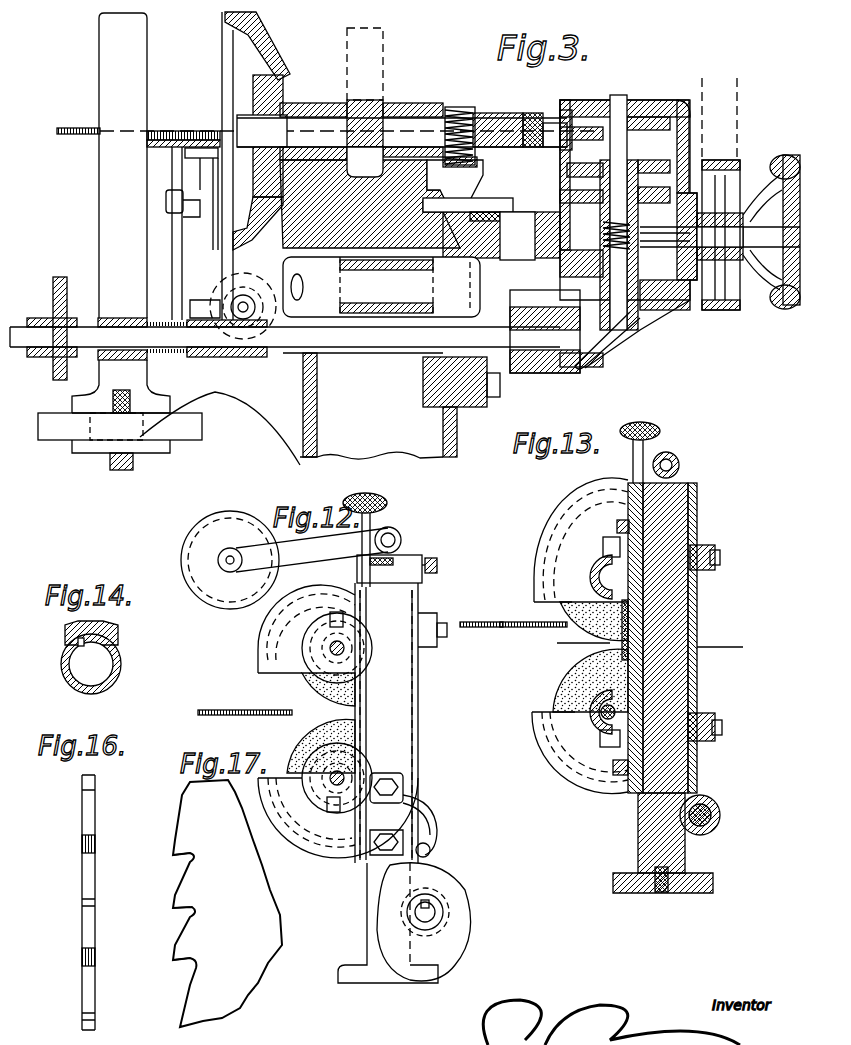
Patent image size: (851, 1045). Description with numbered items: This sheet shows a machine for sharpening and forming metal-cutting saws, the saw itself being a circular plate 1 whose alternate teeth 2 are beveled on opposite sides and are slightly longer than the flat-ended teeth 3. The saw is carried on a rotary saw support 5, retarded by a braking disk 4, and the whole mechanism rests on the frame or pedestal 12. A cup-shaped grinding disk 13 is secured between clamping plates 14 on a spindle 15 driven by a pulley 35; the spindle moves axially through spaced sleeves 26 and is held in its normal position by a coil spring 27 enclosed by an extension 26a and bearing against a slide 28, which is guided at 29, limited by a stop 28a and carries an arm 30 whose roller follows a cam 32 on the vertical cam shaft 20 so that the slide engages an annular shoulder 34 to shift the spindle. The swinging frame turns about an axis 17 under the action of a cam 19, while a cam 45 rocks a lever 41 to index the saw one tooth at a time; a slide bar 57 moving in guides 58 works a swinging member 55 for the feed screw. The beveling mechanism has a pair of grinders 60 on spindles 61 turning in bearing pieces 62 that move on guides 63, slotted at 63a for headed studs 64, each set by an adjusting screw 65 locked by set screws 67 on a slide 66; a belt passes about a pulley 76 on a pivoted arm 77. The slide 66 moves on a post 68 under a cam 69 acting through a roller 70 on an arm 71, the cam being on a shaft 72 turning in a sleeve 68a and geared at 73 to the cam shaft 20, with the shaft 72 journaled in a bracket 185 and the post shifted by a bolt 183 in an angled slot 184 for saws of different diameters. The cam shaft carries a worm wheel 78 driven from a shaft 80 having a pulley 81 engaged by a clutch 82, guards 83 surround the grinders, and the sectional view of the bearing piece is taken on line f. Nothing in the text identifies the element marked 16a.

In FIG. 3, the circular plate 1 is at (78, 128).
In FIG. 12, the circular plate 1 is at (250, 717).
In FIG. 13, the circular plate 1 is at (503, 630).
In FIG. 16, the circular plate 1 is at (97, 928).
In FIG. 17, the circular plate 1 is at (227, 903).
In FIG. 16, the teeth 2 is at (84, 848).
In FIG. 17, the teeth 2 is at (190, 853).
In FIG. 16, the teeth 3 is at (86, 903).
In FIG. 17, the teeth 3 is at (182, 910).
In FIG. 3, the braking disk 4 is at (205, 158).
In FIG. 3, the saw support 5 is at (162, 131).
In FIG. 3, the frame or pedestal 12 is at (320, 409).
In FIG. 3, the tooth shaping or grinding disk 13 is at (252, 26).
In FIG. 3, the clamping plates 14 is at (280, 82).
In FIG. 3, the spindle 15 is at (412, 125).
In FIG. 3, the slot 16a is at (516, 228).
In FIG. 3, the axis 17 is at (381, 287).
In FIG. 3, the cam 19 is at (615, 165).
In FIG. 3, the cam shaft 20 is at (616, 295).
In FIG. 3, the bearing pieces or sleeves 26 is at (320, 103).
In FIG. 3, the extension 26a is at (470, 107).
In FIG. 3, the coil spring 27 is at (455, 107).
In FIG. 3, the slide 28 is at (530, 113).
In FIG. 3, the stop 28a is at (562, 112).
In FIG. 3, the guide 29 is at (451, 202).
In FIG. 3, the arm 30 is at (575, 100).
In FIG. 3, the cam 32 is at (648, 145).
In FIG. 3, the annular shoulder 34 is at (492, 120).
In FIG. 3, the pulley 35 is at (365, 102).
In FIG. 3, the lever 41 is at (528, 198).
In FIG. 3, the cam 45 is at (582, 205).
In FIG. 3, the swinging member 55 is at (200, 316).
In FIG. 3, the slide bar 57 is at (172, 237).
In FIG. 3, the guides 58 is at (172, 290).
In FIG. 12, the grinders 60 is at (290, 683).
In FIG. 13, the grinders 60 is at (581, 540).
In FIG. 12, the spindles 61 is at (345, 655).
In FIG. 13, the spindles 61 is at (590, 585).
In FIG. 13, the bearing pieces 62 is at (600, 572).
In FIG. 14, the guides 63 is at (75, 621).
In FIG. 13, the slots 63a is at (617, 526).
In FIG. 13, the headed studs 64 is at (603, 546).
In FIG. 12, the adjusting screw 65 is at (365, 615).
In FIG. 13, the adjusting screw 65 is at (633, 466).
In FIG. 12, the slide 66 is at (389, 572).
In FIG. 13, the slide 66 is at (628, 795).
In FIG. 14, the slide 66 is at (100, 630).
In FIG. 12, the set screws 67 is at (437, 567).
In FIG. 3, the post 68 is at (121, 410).
In FIG. 12, the post 68 is at (367, 940).
In FIG. 13, the post 68 is at (680, 642).
In FIG. 3, the sleeve 68a is at (160, 358).
In FIG. 13, the sleeve 68a is at (718, 806).
In FIG. 3, the cam 69 is at (53, 292).
In FIG. 12, the cam 69 is at (450, 872).
In FIG. 12, the roller 70 is at (430, 850).
In FIG. 12, the arm 71 is at (430, 825).
In FIG. 3, the shaft 72 is at (285, 339).
In FIG. 12, the shaft 72 is at (445, 910).
In FIG. 13, the shaft 72 is at (715, 825).
In FIG. 3, the gearing 73 is at (632, 325).
In FIG. 12, the pulley 76 is at (238, 515).
In FIG. 12, the arm 77 is at (318, 549).
In FIG. 3, the worm wheel 78 is at (632, 235).
In FIG. 3, the shaft 80 is at (720, 236).
In FIG. 3, the pulley 81 is at (725, 162).
In FIG. 3, the clutch 82 is at (786, 160).
In FIG. 3, the guards 83 is at (250, 288).
In FIG. 12, the guards 83 is at (318, 856).
In FIG. 13, the guards 83 is at (562, 780).
In FIG. 3, the bolt 183 is at (145, 440).
In FIG. 3, the slot 184 is at (100, 430).
In FIG. 3, the bracket 185 is at (547, 310).
In FIG. 13, the section line f— f is at (650, 646).